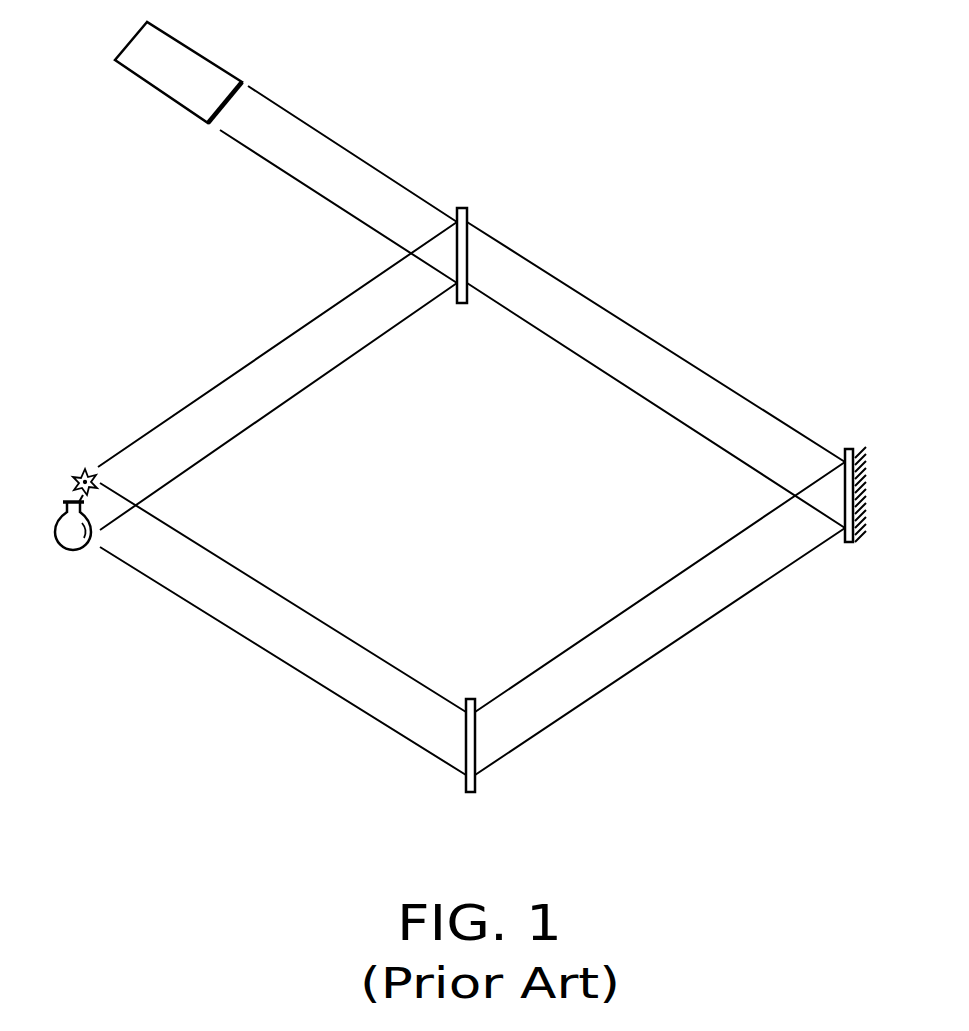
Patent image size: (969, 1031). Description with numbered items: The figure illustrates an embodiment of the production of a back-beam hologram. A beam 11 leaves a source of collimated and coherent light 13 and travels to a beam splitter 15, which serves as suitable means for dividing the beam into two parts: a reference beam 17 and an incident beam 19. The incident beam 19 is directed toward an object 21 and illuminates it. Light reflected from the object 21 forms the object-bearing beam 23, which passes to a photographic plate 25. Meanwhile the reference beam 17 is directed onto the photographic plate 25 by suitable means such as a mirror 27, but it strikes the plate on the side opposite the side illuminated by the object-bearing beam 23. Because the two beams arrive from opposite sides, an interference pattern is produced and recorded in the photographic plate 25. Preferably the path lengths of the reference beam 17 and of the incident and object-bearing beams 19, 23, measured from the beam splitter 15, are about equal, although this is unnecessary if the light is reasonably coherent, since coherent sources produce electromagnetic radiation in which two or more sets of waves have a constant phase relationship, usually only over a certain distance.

The beam 11 is at (366, 158).
The source of collimated and coherent light 13 is at (188, 80).
The beam splitter 15 is at (461, 208).
The reference beam 17 is at (745, 397).
The incident beam 19 is at (286, 404).
The object 21 is at (67, 545).
The object-bearing beam 23 is at (277, 660).
The photographic plate 25 is at (470, 792).
The mirror 27 is at (848, 447).